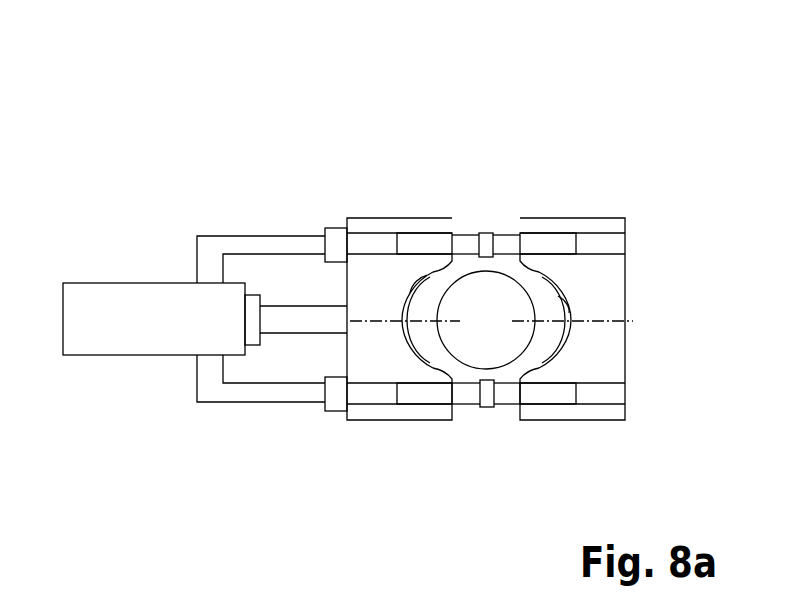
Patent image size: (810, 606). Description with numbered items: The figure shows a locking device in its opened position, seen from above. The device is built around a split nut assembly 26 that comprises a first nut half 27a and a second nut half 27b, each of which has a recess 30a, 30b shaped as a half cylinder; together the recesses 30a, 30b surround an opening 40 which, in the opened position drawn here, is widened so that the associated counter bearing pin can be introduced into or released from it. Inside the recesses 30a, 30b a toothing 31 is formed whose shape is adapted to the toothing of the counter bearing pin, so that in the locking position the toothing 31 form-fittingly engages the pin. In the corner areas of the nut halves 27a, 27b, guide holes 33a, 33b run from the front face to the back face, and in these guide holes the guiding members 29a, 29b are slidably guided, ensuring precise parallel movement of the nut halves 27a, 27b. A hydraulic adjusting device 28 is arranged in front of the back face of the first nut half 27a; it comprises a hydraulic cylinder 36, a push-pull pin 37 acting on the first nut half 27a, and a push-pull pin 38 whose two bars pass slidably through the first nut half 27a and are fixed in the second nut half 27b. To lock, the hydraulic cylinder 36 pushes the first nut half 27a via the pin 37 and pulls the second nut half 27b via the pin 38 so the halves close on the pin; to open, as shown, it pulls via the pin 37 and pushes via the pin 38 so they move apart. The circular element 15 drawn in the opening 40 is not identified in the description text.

The split nut assembly 26 is at (298, 157).
The hydraulic adjusting device 28 is at (152, 278).
The hydraulic cylinder 36 is at (127, 327).
The push-pull pin 37 is at (290, 322).
The push-pull pin 38 is at (263, 238).
The first nut half 27a is at (372, 353).
The second nut half 27b is at (595, 283).
The guiding member 29a is at (506, 232).
The guiding member 29b is at (505, 408).
The recess 30a is at (420, 332).
The recess 30b is at (553, 328).
The toothing 31 is at (433, 265).
The guide hole 33a is at (610, 393).
The guide hole 33b is at (613, 245).
The opening 40 is at (537, 290).
The tube 15 is at (503, 333).